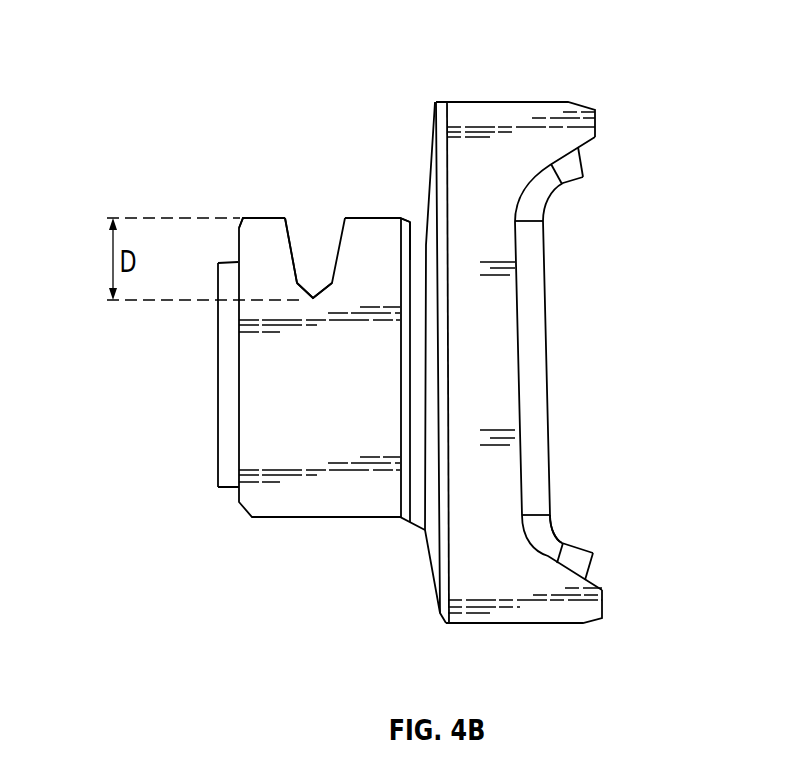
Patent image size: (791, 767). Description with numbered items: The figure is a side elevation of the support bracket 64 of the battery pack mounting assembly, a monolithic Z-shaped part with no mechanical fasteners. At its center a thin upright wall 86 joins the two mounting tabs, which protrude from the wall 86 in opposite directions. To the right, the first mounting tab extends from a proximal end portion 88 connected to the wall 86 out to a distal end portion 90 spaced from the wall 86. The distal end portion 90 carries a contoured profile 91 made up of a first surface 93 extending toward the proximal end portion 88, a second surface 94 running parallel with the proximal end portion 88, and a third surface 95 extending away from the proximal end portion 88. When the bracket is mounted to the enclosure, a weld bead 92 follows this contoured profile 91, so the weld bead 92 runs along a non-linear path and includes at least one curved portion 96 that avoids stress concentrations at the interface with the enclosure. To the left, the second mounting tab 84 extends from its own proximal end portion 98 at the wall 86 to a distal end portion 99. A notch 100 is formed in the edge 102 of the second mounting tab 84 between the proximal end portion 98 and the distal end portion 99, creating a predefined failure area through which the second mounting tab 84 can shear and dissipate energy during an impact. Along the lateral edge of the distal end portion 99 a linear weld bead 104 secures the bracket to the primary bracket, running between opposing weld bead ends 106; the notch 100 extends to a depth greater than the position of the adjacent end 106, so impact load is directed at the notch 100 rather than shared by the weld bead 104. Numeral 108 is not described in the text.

The support bracket 64 is at (490, 89).
The second mounting tab 84 is at (305, 490).
The wall 86 is at (423, 240).
The proximal end portion 88 is at (440, 92).
The distal end portion 90 is at (585, 90).
The contoured profile 91 is at (600, 156).
The weld bead 92 is at (530, 328).
The first surface 93 is at (534, 170).
The second surface 94 is at (520, 412).
The third surface 95 is at (554, 545).
The curved portion 96 is at (547, 212).
The proximal end portion 98 is at (362, 203).
The distal end portion 99 is at (245, 204).
The notch 100 is at (308, 250).
The edge 102 is at (268, 217).
The weld bead 104 is at (228, 366).
The weld bead ends 106 is at (235, 262).
The notch bottom 108 is at (313, 300).